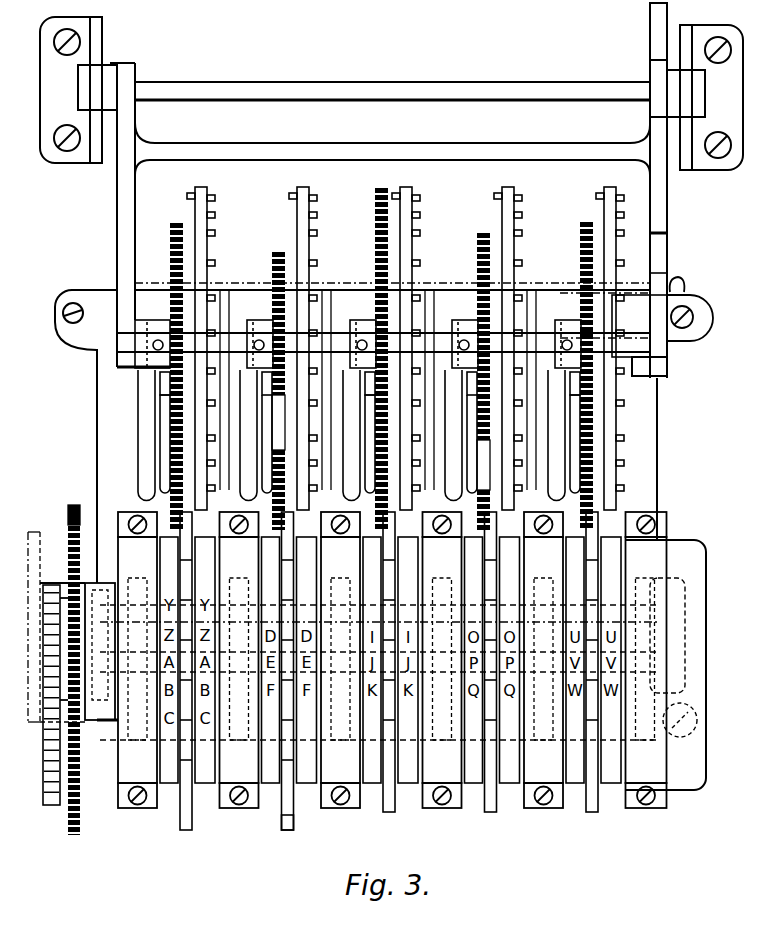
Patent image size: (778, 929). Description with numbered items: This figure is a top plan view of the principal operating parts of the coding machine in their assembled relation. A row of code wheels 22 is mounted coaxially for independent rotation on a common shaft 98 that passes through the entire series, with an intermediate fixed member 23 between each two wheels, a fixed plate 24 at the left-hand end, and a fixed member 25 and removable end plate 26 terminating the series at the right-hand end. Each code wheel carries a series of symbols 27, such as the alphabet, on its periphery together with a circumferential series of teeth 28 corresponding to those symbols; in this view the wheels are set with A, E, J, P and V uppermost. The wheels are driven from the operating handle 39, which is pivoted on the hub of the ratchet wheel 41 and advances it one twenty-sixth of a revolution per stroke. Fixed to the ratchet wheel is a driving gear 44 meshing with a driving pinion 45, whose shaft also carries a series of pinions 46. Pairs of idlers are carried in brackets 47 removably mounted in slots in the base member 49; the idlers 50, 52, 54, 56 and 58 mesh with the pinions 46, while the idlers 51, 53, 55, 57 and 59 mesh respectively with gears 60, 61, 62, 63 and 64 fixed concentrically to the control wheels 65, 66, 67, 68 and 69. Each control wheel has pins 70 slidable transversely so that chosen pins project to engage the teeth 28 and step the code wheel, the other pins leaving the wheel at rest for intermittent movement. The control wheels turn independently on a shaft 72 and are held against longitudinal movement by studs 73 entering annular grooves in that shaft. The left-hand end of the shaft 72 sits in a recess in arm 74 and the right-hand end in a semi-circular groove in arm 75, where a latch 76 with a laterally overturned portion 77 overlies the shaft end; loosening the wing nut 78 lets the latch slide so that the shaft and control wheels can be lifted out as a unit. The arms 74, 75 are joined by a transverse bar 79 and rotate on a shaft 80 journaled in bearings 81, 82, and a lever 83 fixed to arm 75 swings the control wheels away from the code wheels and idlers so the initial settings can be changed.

The code wheel 22 is at (193, 800).
The intermediate fixed member 23 is at (355, 808).
The fixed plate 24 is at (143, 808).
The fixed member 25 is at (640, 810).
The removable end plate 26 is at (703, 760).
The symbols 27 is at (306, 702).
The teeth 28 is at (288, 832).
The operating handle 39 is at (36, 566).
The ratchet wheel 41 is at (50, 806).
The driving gear 44 is at (74, 836).
The driving pinion 45 is at (73, 505).
The pinions 46 is at (165, 553).
The brackets 47 is at (146, 440).
The base member 49 is at (526, 302).
The idler 50 is at (160, 413).
The idler 51 is at (170, 243).
The idler 52 is at (265, 450).
The idler 53 is at (272, 270).
The idler 54 is at (365, 445).
The idler 55 is at (375, 245).
The idler 56 is at (470, 445).
The idler 57 is at (477, 266).
The idler 58 is at (570, 445).
The idler 59 is at (580, 256).
The gear 60 is at (160, 381).
The gear 61 is at (262, 390).
The gear 62 is at (365, 388).
The gear 63 is at (467, 390).
The gear 64 is at (570, 384).
The control wheel 65 is at (208, 250).
The control wheel 66 is at (310, 248).
The control wheel 67 is at (413, 223).
The control wheel 68 is at (515, 227).
The control wheel 69 is at (617, 233).
The pins 70 is at (190, 194).
The shaft 72 is at (625, 345).
The studs 73 is at (564, 349).
The arm 74 is at (117, 266).
The arm 75 is at (668, 207).
The latch 76 is at (668, 362).
The laterally overturned portion 77 is at (655, 290).
The wing nut 78 is at (688, 285).
The transverse bar 79 is at (452, 148).
The shaft 80 is at (222, 82).
The bearing 81 is at (706, 90).
The bearing 82 is at (78, 80).
The lever 83 is at (650, 32).
The common shaft 98 is at (690, 630).